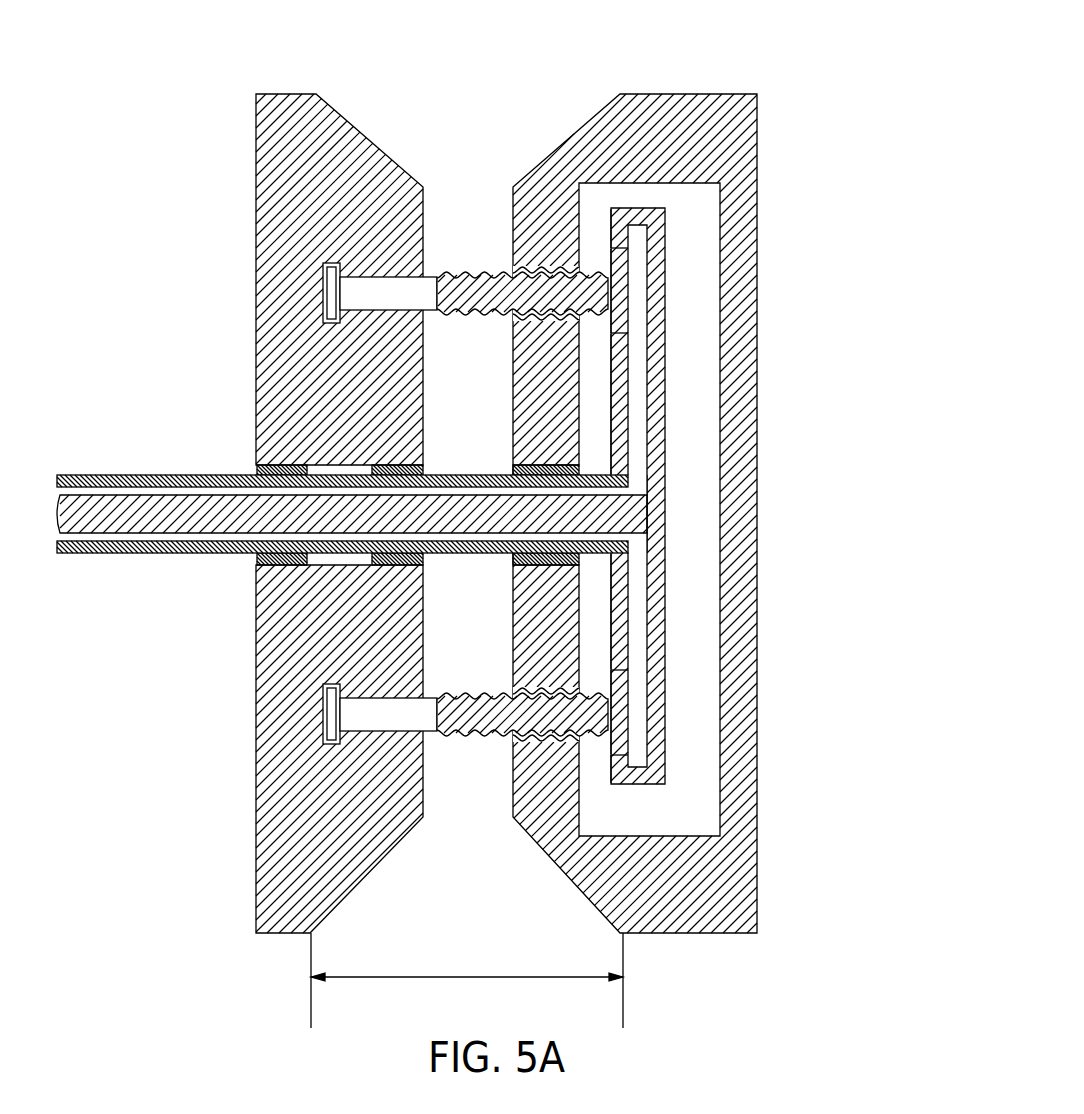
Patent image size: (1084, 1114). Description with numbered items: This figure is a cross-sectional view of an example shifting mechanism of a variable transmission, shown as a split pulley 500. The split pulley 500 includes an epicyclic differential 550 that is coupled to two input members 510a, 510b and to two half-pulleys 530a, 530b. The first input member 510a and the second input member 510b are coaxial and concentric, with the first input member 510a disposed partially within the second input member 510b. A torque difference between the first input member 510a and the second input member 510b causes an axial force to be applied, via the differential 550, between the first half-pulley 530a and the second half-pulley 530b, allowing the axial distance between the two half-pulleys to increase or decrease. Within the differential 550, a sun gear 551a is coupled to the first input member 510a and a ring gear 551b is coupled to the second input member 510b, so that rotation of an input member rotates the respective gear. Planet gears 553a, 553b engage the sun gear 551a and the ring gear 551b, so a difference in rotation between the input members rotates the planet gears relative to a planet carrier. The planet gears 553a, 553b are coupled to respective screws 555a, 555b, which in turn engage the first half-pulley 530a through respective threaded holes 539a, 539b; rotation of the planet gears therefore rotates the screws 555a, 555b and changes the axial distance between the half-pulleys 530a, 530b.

The split pulley 500 is at (501, 520).
The first input member 510a is at (95, 475).
The second input member 510b is at (130, 522).
The first half-pulley 530a is at (670, 93).
The second half-pulley 530b is at (283, 93).
The threaded hole 539a is at (535, 256).
The threaded hole 539b is at (543, 755).
The epicyclic differential 550 is at (697, 775).
The sun gear 551a is at (620, 348).
The ring gear 551b is at (612, 250).
The planet gear 553a is at (620, 290).
The planet gear 553b is at (620, 713).
The screw 555a is at (433, 278).
The screw 555b is at (470, 731).